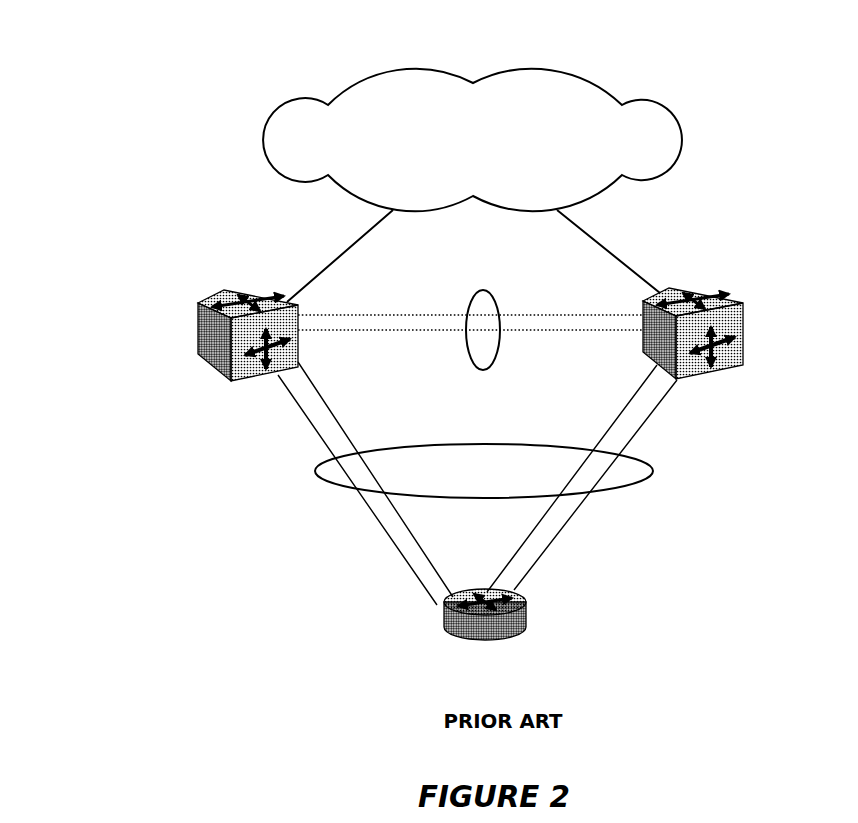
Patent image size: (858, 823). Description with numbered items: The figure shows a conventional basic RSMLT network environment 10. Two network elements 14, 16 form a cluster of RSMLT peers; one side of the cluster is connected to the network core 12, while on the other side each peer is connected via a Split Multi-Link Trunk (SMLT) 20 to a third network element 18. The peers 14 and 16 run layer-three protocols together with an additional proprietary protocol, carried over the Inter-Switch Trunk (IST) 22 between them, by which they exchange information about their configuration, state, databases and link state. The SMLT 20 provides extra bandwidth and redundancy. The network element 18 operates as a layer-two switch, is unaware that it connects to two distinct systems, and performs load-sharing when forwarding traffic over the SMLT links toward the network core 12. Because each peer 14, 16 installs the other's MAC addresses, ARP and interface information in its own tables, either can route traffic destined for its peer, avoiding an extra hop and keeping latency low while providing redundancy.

The RSMLT network environment 10 is at (137, 57).
The network core 12 is at (270, 131).
The network element 14 is at (198, 306).
The network element 16 is at (744, 306).
The network element 18 is at (443, 608).
The Split Multi-Link Trunk (SMLT) 20 is at (313, 462).
The Inter-Switch Trunk (IST) 22 is at (470, 304).